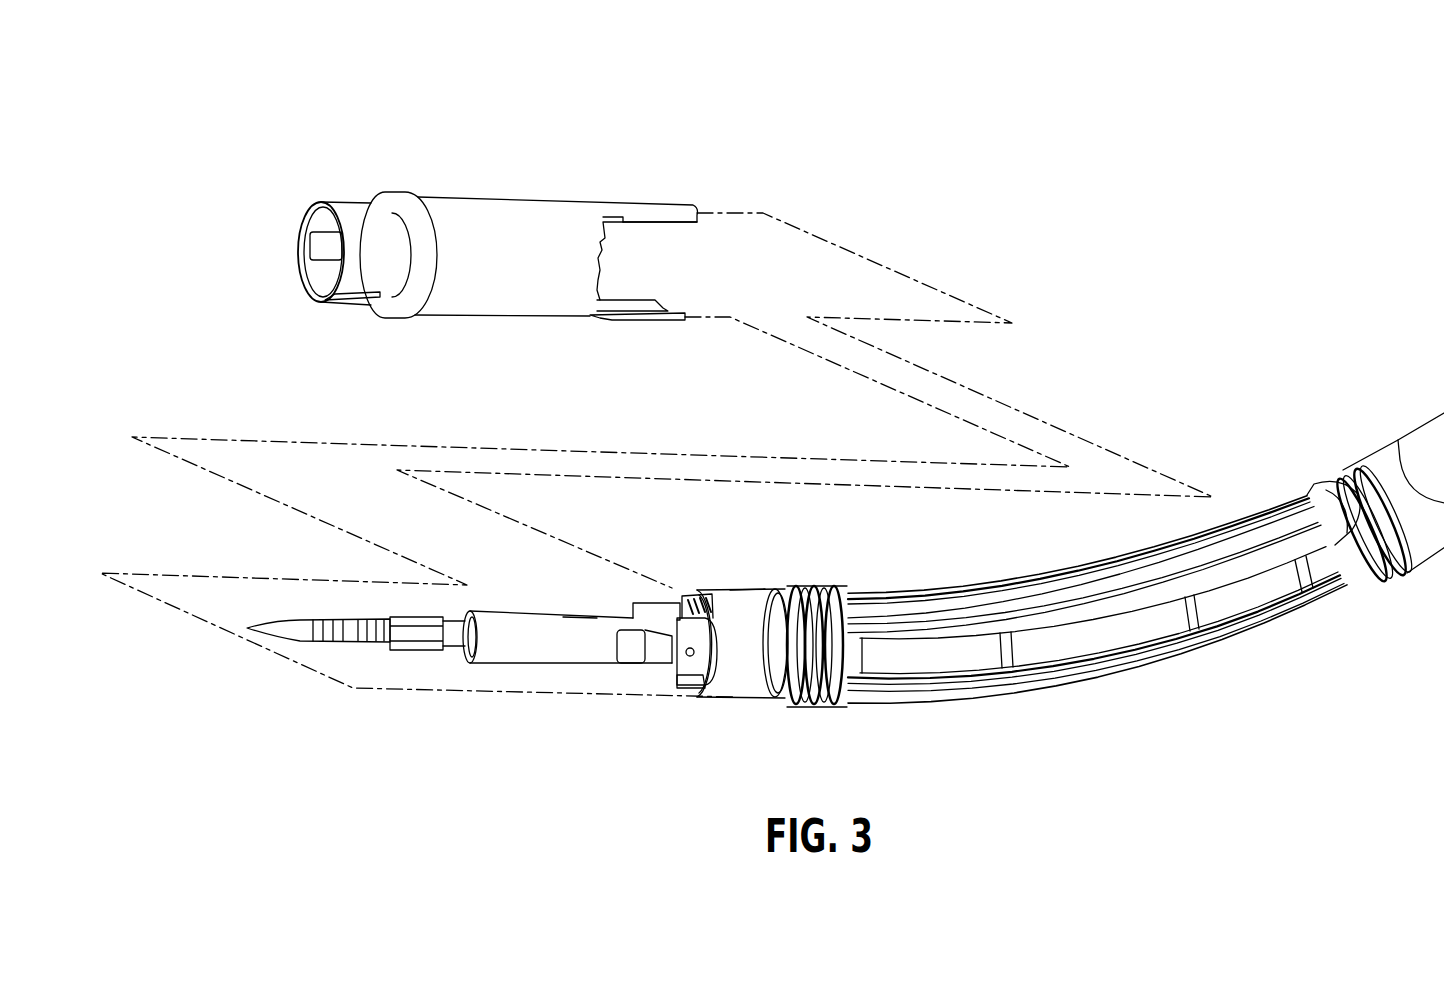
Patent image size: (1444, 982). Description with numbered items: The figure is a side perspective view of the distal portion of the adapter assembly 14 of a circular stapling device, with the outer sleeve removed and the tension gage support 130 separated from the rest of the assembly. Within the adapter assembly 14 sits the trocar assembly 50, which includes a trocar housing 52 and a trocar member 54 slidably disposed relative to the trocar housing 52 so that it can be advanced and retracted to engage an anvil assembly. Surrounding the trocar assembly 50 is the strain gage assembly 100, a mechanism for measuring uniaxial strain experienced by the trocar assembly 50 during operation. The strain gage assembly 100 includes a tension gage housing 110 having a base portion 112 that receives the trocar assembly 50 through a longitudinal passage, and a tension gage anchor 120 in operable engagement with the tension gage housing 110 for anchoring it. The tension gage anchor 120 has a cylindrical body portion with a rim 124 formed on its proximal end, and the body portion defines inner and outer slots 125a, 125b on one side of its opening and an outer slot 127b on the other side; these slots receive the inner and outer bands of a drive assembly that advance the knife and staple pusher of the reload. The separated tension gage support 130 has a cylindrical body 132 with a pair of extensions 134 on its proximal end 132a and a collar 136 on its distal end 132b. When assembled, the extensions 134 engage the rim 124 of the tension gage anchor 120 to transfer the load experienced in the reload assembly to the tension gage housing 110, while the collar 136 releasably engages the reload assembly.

The strain gage assembly 100 is at (772, 429).
The tension gage support 130 is at (524, 215).
The cylindrical body 132 is at (568, 205).
The proximal end 132a is at (567, 315).
The distal end 132b is at (427, 316).
The extensions 134 is at (647, 303).
The collar 136 is at (393, 200).
The adapter assembly 14 is at (1146, 536).
The trocar assembly 50 is at (459, 681).
The trocar housing 52 is at (513, 653).
The trocar member 54 is at (356, 677).
The tension gage housing 110 is at (682, 659).
The base portion 112 is at (664, 610).
The inner slot 125a is at (740, 610).
The outer slot 125b is at (697, 612).
The outer slot 127b is at (693, 687).
The tension gage anchor 120 is at (764, 661).
The rim 124 is at (790, 703).